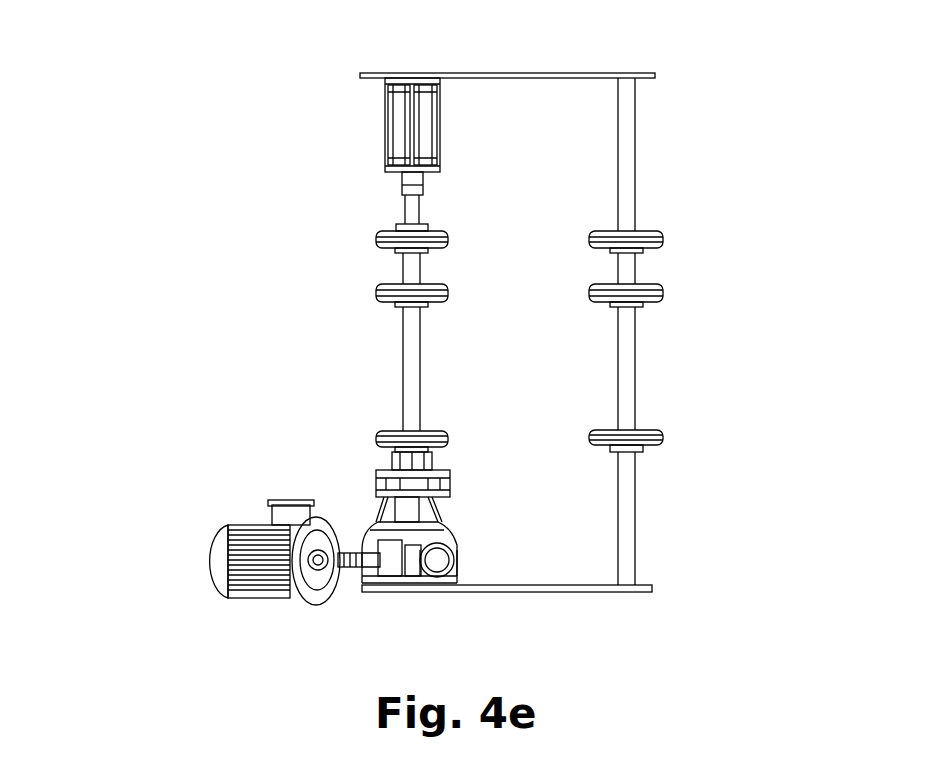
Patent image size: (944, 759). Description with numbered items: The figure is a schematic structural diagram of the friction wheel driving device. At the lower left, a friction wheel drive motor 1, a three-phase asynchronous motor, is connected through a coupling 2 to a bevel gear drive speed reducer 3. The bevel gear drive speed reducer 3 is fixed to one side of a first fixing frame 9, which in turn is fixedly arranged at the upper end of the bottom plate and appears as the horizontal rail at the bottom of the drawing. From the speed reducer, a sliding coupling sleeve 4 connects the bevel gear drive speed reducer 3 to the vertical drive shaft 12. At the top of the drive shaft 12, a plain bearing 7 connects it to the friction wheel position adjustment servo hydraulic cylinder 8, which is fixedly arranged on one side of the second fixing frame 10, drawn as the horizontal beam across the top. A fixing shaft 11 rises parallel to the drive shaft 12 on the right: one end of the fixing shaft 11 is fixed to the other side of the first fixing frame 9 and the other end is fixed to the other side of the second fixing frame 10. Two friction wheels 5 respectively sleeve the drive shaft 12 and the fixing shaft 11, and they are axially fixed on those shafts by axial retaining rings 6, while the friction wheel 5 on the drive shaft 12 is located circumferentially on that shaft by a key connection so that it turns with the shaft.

The friction wheel drive motor 1 is at (247, 590).
The coupling 2 is at (322, 563).
The bevel gear drive speed reducer 3 is at (382, 571).
The sliding coupling sleeve 4 is at (405, 572).
The friction wheel 5 is at (596, 446).
The axial retaining ring 6 is at (625, 452).
The plain bearing 7 is at (407, 229).
The friction wheel position adjustment servo hydraulic cylinder 8 is at (416, 72).
The first fixing frame 9 is at (790, 543).
The second fixing frame 10 is at (644, 78).
The fixing shaft 11 is at (790, 233).
The drive shaft 12 is at (416, 392).